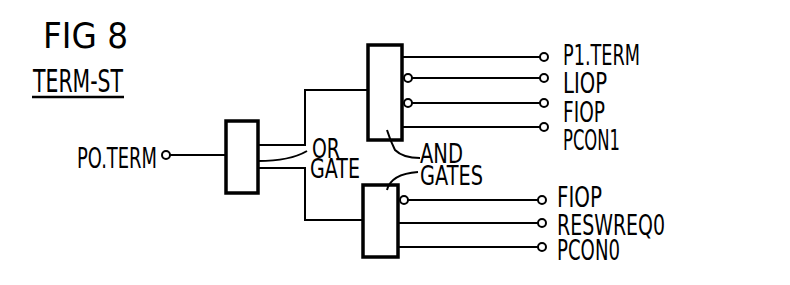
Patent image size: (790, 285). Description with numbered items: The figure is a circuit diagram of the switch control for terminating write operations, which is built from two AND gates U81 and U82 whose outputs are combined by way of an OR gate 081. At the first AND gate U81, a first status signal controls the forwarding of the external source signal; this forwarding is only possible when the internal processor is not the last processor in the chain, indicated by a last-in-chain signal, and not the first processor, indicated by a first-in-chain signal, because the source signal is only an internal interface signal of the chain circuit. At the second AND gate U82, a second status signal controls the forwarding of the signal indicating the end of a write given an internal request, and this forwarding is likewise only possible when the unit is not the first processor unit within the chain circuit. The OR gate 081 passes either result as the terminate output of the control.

The OR gate 081 is at (247, 141).
The AND gate U81 is at (366, 92).
The AND gate U82 is at (357, 224).